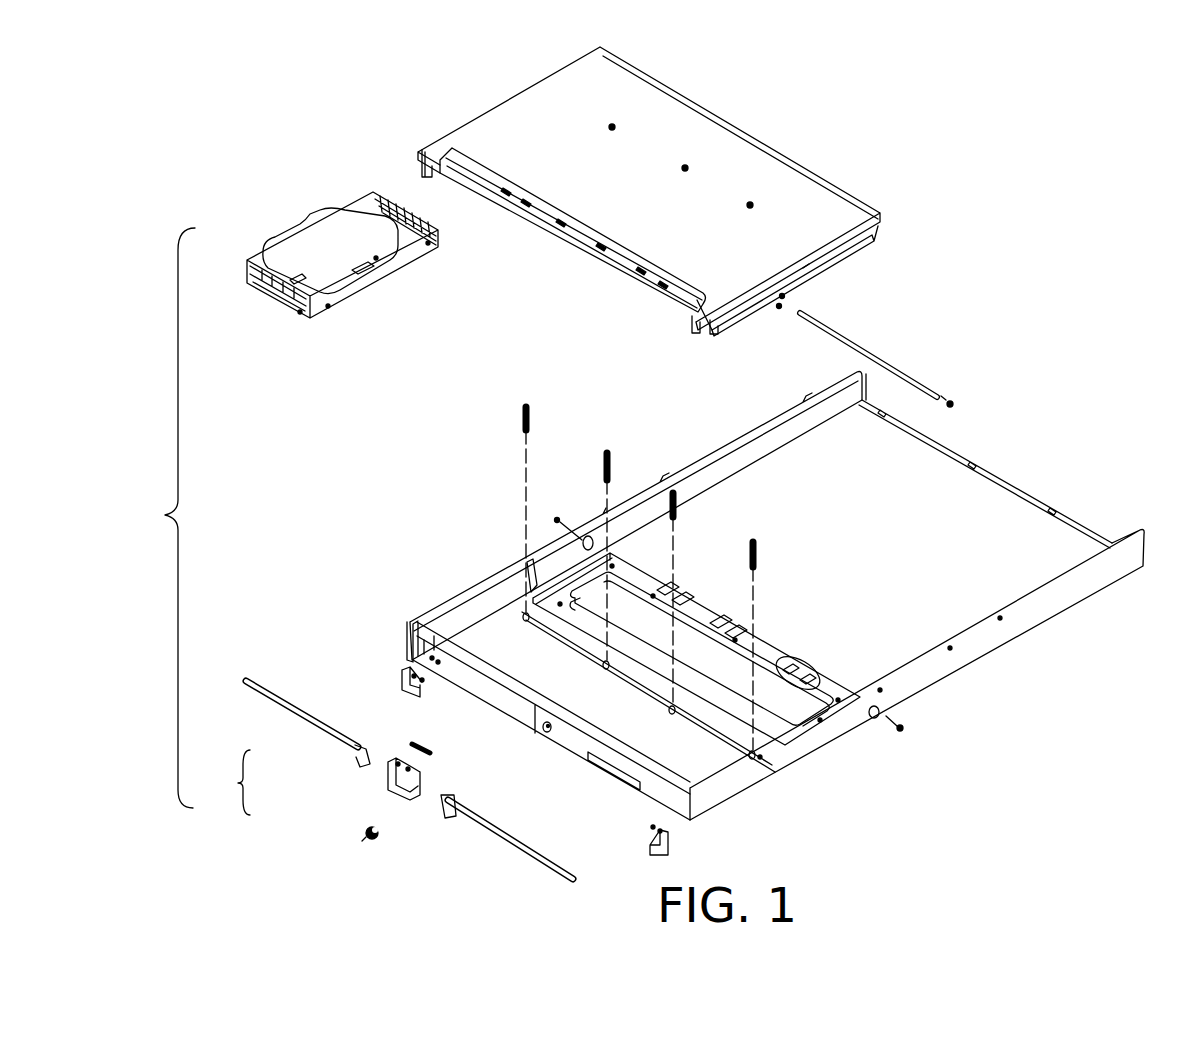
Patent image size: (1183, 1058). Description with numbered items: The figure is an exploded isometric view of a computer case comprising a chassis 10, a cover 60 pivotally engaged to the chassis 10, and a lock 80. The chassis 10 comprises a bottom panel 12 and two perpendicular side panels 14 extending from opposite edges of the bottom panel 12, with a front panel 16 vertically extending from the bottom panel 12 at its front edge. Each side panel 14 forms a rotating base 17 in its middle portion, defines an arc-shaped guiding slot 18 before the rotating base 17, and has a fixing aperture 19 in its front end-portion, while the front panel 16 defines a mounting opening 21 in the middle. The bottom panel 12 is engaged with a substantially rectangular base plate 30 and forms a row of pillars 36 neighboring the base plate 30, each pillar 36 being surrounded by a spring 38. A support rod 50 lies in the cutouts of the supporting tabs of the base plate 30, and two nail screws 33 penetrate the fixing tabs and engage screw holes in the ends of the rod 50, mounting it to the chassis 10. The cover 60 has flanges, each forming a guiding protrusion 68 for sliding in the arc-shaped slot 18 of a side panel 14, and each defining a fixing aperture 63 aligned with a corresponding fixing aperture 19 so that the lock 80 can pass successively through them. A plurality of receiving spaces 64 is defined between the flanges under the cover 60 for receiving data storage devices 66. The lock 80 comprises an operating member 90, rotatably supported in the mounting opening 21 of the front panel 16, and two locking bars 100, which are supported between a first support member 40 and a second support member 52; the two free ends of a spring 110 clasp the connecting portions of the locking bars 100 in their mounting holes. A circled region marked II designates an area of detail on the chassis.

The chassis 10 is at (1086, 512).
The bottom panel 12 is at (988, 490).
The side panel 14 is at (775, 432).
The front panel 16 is at (642, 770).
The rotating base 17 is at (882, 710).
The arc-shaped guiding slot 18 is at (526, 570).
The fixing aperture 19 is at (406, 622).
The mounting opening 21 is at (547, 737).
The base plate 30 is at (797, 712).
The nail screw 33 is at (954, 403).
The pillar 36 is at (768, 760).
The spring 38 is at (524, 414).
The first support member 40 is at (396, 668).
The support rod 50 is at (853, 343).
The second support member 52 is at (426, 772).
The cover 60 is at (805, 152).
The fixing aperture 63 is at (420, 156).
The receiving space 64 is at (527, 223).
The data storage device 66 is at (322, 230).
The guiding protrusion 68 is at (805, 271).
The lock 80 is at (290, 761).
The operating member 90 is at (358, 823).
The locking bar 100 is at (337, 747).
The spring 110 is at (413, 743).
The detail area II is at (806, 660).